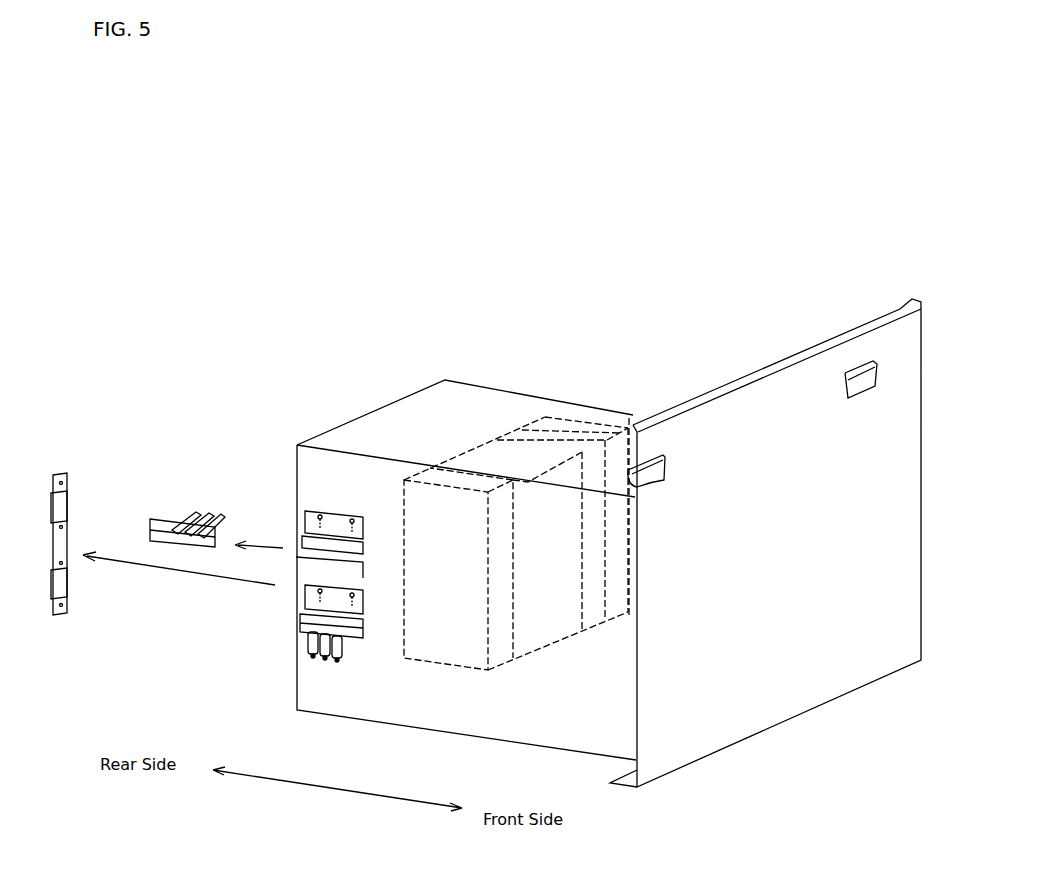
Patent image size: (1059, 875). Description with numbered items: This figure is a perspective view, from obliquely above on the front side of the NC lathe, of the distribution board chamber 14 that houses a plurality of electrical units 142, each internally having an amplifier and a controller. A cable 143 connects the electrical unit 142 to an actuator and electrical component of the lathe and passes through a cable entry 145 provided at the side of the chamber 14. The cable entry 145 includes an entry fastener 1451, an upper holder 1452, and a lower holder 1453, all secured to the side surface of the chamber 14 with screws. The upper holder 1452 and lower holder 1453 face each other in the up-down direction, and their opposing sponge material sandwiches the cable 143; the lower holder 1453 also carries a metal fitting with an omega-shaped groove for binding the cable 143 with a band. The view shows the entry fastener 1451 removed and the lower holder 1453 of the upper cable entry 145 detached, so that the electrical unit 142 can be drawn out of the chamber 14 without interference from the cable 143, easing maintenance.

The distribution board chamber 14 is at (393, 421).
The electrical unit 142 is at (528, 642).
The cable 143 is at (223, 513).
The cable entry 145 is at (66, 553).
The entry fastener 1451 is at (70, 478).
The upper holder 1452 is at (305, 522).
The lower holder 1453 is at (167, 516).